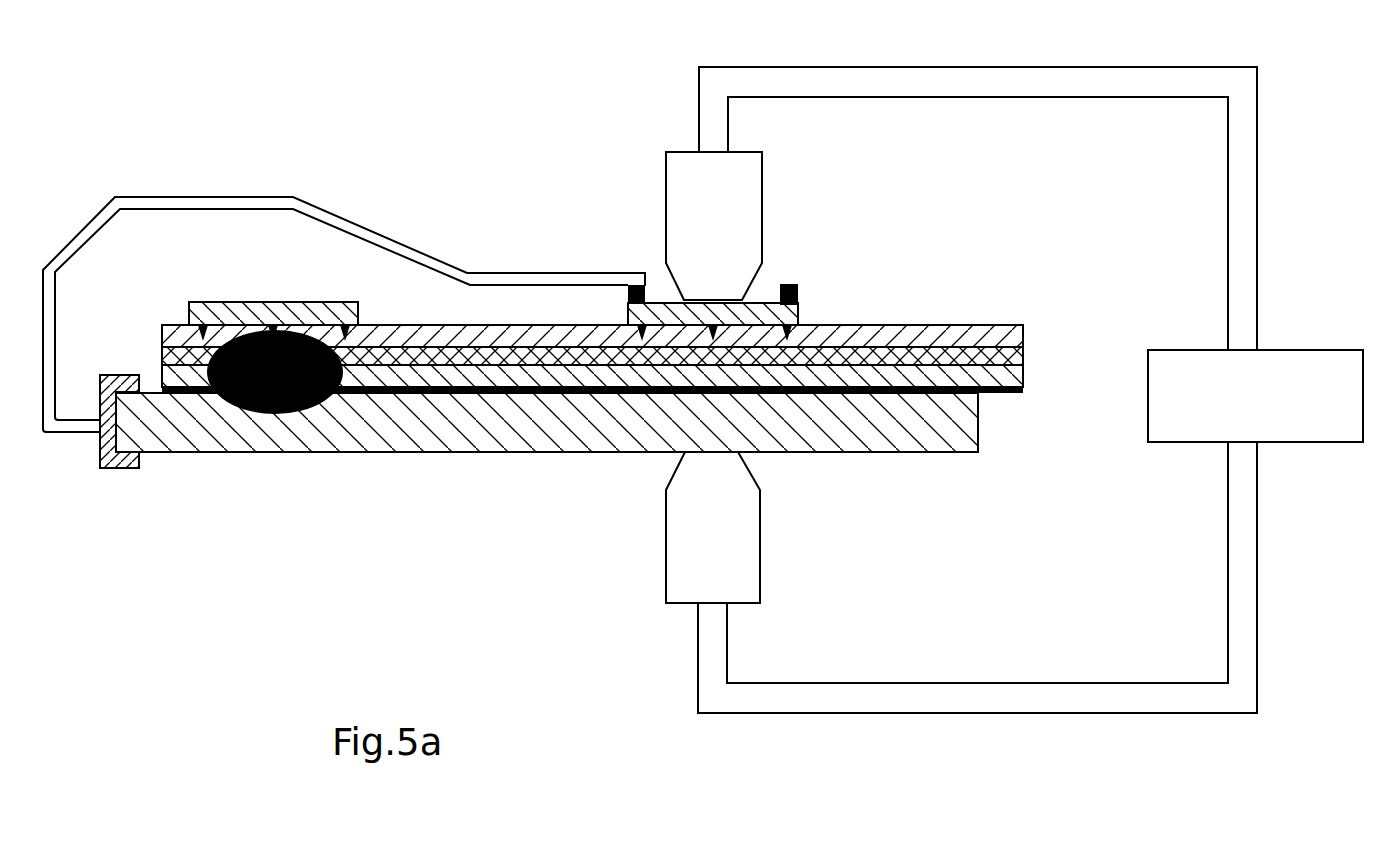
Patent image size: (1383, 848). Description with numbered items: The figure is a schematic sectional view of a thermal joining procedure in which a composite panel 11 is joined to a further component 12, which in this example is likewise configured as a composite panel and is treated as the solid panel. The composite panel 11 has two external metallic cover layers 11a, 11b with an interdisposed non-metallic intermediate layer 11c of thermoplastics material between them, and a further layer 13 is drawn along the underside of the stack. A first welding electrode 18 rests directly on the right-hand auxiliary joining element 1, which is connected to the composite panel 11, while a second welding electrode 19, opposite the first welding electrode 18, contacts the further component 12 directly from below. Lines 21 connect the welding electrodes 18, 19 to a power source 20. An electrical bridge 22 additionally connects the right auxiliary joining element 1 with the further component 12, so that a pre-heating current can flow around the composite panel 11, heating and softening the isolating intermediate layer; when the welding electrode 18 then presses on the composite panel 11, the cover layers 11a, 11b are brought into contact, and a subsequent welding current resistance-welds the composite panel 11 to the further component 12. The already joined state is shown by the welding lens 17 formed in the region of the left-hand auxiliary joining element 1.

The auxiliary joining element 1 is at (316, 314).
The composite panel 11 is at (641, 295).
The external metallic cover layer 11a is at (1005, 335).
The external metallic cover layer 11b is at (1005, 375).
The non-metallic intermediate layer 11c is at (1000, 353).
The further component 12 is at (949, 485).
The conductive layer 13 is at (1023, 395).
The welding lens 17 is at (243, 428).
The first welding electrode 18 is at (747, 205).
The second welding electrode 19 is at (745, 557).
The power source 20 is at (1241, 411).
The lines 21 is at (958, 75).
The electrical bridge 22 is at (263, 162).